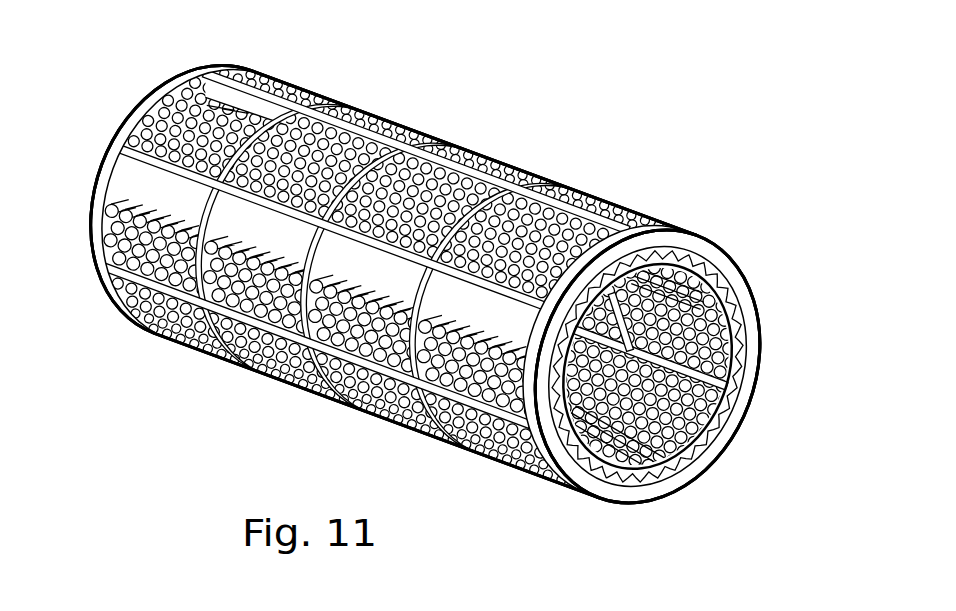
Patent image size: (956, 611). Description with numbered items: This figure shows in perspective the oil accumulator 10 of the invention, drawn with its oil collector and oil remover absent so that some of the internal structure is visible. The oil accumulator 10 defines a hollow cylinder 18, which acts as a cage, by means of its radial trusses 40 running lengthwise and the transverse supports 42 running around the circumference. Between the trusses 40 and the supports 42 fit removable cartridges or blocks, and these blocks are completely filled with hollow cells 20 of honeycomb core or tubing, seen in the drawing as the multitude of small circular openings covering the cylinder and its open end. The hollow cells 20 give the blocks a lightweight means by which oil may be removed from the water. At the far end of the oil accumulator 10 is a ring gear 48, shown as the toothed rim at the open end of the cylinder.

The oil accumulator 10 is at (178, 396).
The hollow cylinder 18 is at (385, 97).
The hollow cells 20 is at (465, 443).
The radial trusses 40 is at (502, 158).
The transverse supports 42 is at (235, 347).
The ring gear 48 is at (757, 378).